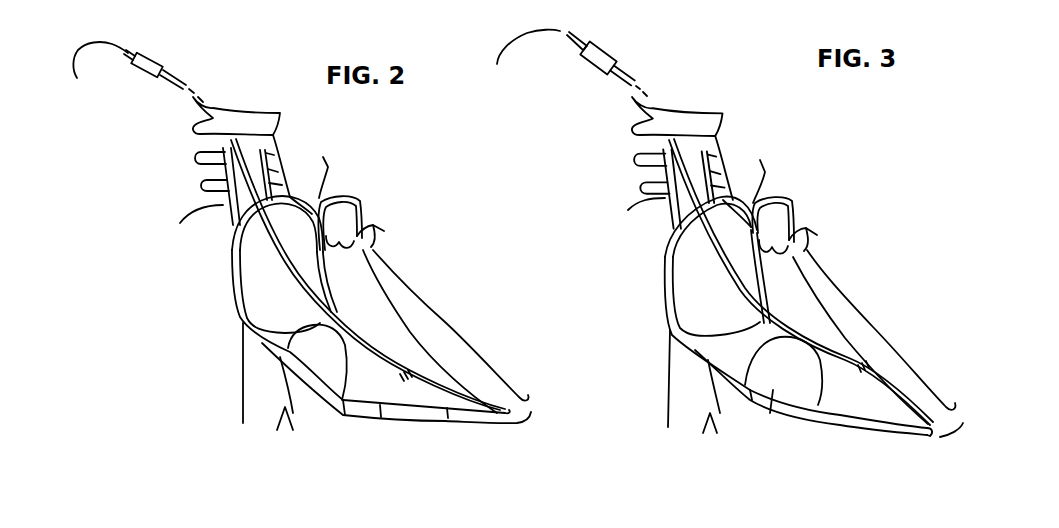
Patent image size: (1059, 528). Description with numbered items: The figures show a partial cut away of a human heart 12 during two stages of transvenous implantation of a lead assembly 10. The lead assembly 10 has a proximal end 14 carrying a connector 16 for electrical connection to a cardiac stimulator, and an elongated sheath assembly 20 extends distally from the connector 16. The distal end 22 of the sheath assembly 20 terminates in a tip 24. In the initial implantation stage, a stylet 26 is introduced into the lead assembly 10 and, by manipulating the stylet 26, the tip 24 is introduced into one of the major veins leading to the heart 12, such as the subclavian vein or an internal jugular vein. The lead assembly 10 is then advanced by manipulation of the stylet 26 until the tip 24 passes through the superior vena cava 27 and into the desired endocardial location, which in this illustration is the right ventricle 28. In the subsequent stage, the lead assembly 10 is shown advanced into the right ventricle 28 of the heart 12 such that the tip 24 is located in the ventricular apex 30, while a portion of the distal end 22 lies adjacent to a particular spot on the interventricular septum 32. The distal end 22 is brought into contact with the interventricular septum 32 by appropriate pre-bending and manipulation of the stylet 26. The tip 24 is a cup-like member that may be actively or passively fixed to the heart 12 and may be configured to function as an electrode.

In FIG. 2, the lead assembly 10 is at (147, 168).
In FIG. 3, the lead assembly 10 is at (596, 162).
In FIG. 2, the human heart 12 is at (400, 420).
In FIG. 3, the human heart 12 is at (807, 420).
In FIG. 2, the proximal end 14 is at (164, 53).
In FIG. 3, the proximal end 14 is at (623, 49).
In FIG. 2, the connector 16 is at (149, 80).
In FIG. 3, the connector 16 is at (588, 62).
In FIG. 2, the sheath assembly 20 is at (342, 403).
In FIG. 3, the sheath assembly 20 is at (751, 396).
In FIG. 2, the distal end 22 is at (446, 418).
In FIG. 3, the distal end 22 is at (882, 400).
In FIG. 2, the tip 24 is at (520, 424).
In FIG. 3, the tip 24 is at (908, 430).
In FIG. 2, the stylet 26 is at (98, 44).
In FIG. 3, the stylet 26 is at (506, 52).
In FIG. 2, the superior vena cava 27 is at (217, 208).
In FIG. 3, the superior vena cava 27 is at (660, 200).
In FIG. 2, the right ventricle 28 is at (380, 377).
In FIG. 3, the right ventricle 28 is at (783, 380).
In FIG. 3, the ventricular apex 30 is at (927, 437).
In FIG. 2, the interventricular septum 32 is at (450, 325).
In FIG. 3, the interventricular septum 32 is at (870, 325).